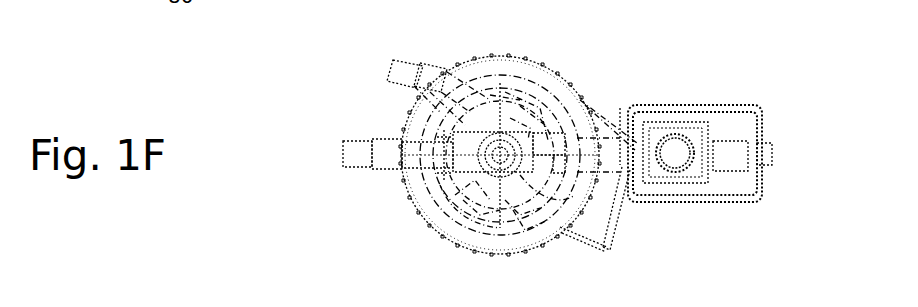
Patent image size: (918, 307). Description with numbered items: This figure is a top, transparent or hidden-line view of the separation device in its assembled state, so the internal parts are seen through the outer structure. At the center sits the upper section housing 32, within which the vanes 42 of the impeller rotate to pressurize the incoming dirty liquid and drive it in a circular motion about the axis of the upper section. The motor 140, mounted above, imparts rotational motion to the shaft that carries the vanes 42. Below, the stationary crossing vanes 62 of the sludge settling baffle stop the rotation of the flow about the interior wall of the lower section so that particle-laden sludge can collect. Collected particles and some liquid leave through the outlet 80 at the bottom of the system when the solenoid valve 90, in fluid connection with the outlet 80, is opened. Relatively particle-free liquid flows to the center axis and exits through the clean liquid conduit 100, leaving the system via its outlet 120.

The upper section housing 32 is at (373, 63).
The vanes 42 is at (513, 210).
The crossing vanes 62 is at (547, 152).
The outlet 80 is at (568, 170).
The solenoid valve 90 is at (682, 97).
The clean liquid conduit 100 is at (437, 137).
The outlet 120 is at (327, 155).
The motor 140 is at (554, 62).